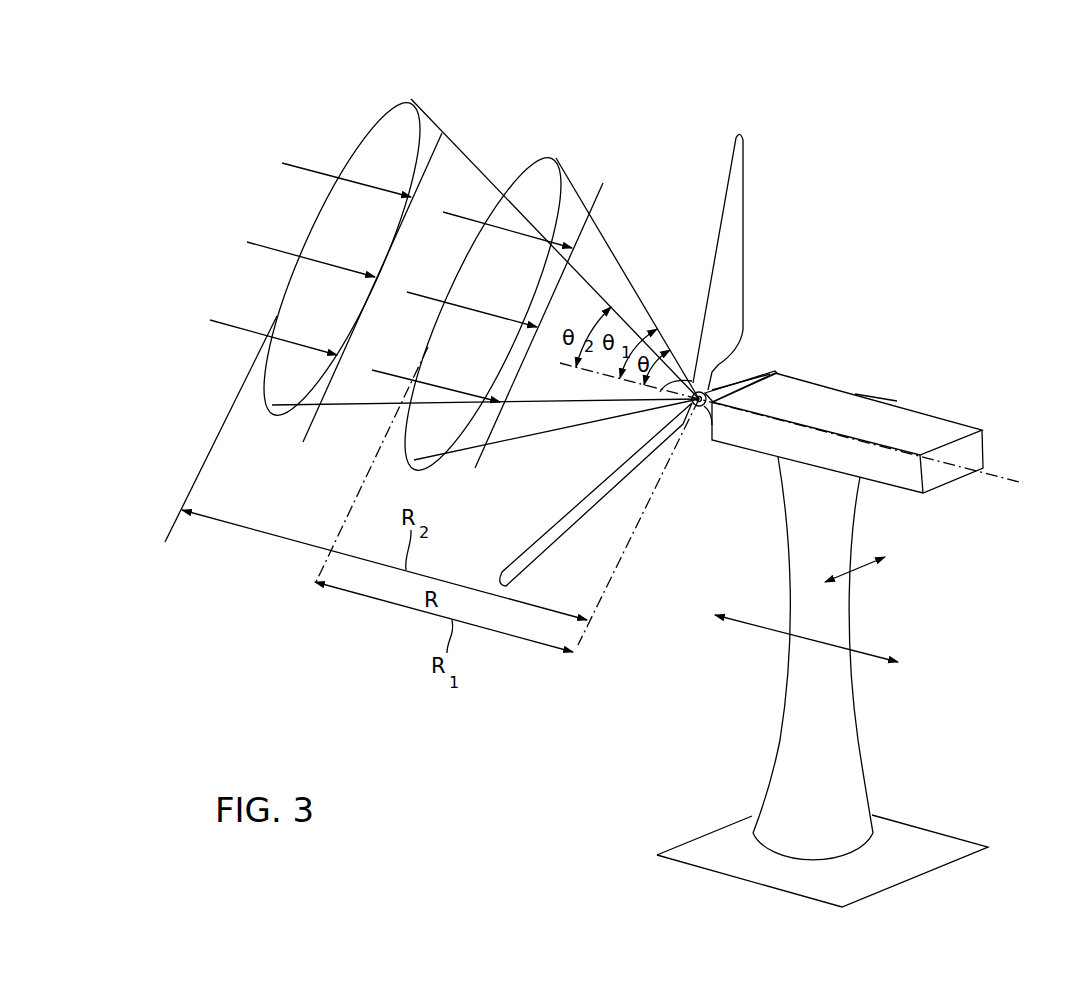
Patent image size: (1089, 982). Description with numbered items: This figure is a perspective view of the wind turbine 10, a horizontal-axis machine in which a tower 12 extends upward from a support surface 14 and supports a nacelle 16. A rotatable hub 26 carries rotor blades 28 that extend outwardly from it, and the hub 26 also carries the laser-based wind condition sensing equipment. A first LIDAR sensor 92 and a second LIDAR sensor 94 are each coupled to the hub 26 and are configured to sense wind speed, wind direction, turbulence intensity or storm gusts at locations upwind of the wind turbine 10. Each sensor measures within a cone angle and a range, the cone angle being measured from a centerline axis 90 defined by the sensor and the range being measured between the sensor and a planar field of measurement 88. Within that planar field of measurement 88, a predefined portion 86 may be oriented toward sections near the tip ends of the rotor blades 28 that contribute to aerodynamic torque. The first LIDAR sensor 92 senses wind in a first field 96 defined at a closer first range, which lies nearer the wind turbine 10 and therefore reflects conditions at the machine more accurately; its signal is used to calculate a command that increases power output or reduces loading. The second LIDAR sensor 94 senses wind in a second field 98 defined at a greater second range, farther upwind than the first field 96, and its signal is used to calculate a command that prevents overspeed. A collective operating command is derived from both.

The wind turbine 10 is at (937, 187).
The tower 12 is at (840, 720).
The support surface 14 is at (927, 852).
The nacelle 16 is at (917, 425).
The hub 26 is at (733, 375).
The rotor blade 28 is at (743, 215).
The predefined portion 86 is at (567, 137).
The planar field of measurement 88 is at (580, 163).
The centerline axis 90 is at (1013, 482).
The first LIDAR sensor 92 is at (773, 373).
The second LIDAR sensor 94 is at (712, 410).
The first field 96 is at (433, 476).
The second field 98 is at (424, 92).